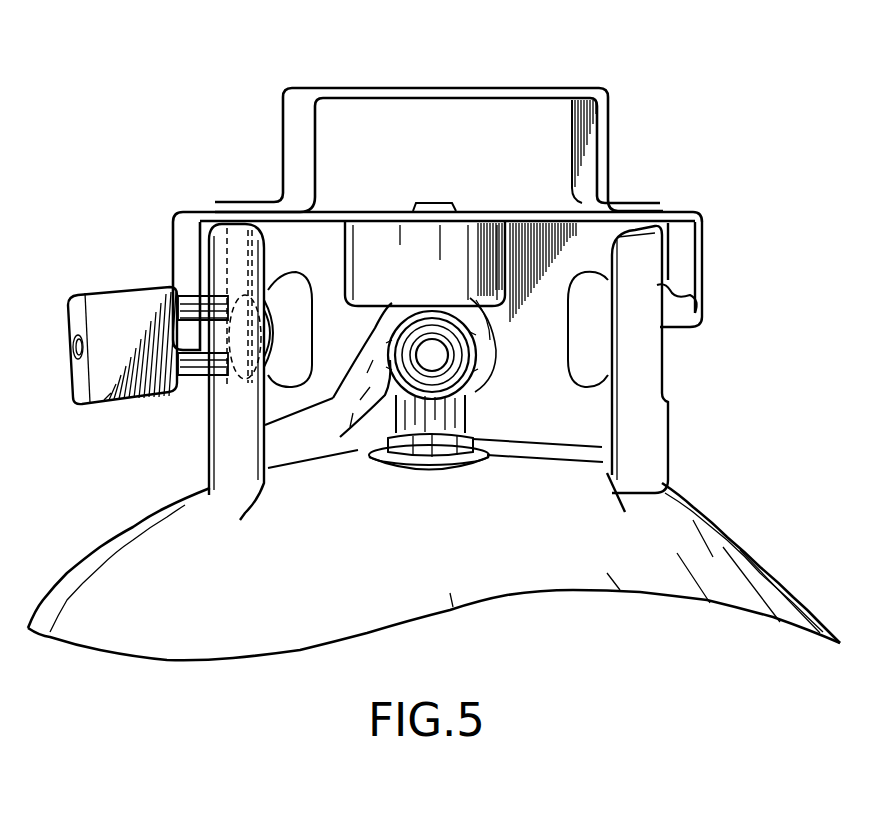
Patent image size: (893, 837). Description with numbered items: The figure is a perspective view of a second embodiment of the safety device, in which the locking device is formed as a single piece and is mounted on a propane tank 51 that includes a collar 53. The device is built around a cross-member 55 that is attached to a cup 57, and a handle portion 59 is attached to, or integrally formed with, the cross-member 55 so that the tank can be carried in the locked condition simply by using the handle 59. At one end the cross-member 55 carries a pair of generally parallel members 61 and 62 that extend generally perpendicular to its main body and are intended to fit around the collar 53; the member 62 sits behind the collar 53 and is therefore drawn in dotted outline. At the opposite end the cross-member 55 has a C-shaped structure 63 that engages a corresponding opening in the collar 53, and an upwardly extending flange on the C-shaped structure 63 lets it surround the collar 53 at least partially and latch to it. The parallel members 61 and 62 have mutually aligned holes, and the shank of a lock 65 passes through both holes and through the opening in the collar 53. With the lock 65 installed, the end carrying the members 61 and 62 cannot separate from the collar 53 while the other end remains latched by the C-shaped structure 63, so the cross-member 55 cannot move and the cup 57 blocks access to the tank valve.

The propane tank 51 is at (712, 550).
The collar 53 is at (637, 434).
The cross-member 55 is at (497, 210).
The cup 57 is at (478, 300).
The handle portion 59 is at (455, 88).
The parallel member 61 is at (183, 240).
The parallel member 62 is at (227, 378).
The C-shaped structure 63 is at (702, 253).
The lock 65 is at (100, 298).